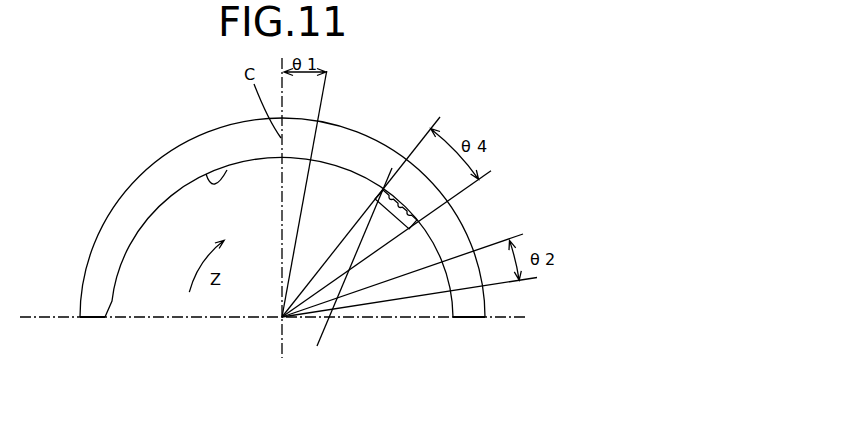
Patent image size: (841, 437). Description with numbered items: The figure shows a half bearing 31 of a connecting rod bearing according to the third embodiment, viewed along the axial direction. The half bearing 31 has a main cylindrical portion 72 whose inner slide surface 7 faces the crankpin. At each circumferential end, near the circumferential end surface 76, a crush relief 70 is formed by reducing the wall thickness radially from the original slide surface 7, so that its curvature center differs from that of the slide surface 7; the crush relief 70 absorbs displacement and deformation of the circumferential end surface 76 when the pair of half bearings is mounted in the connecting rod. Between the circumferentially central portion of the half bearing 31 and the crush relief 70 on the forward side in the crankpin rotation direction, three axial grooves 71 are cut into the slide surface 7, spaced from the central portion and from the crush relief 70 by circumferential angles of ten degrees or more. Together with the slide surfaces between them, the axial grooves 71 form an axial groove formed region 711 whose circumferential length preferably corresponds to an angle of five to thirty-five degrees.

The half bearing 31 is at (112, 208).
The main cylindrical portion 72 is at (213, 148).
The slide surface 7 is at (210, 182).
The axial groove 71 is at (385, 189).
The axial groove formed region 711 is at (347, 268).
The crush relief 70 is at (113, 302).
The circumferential end surface 76 is at (97, 320).